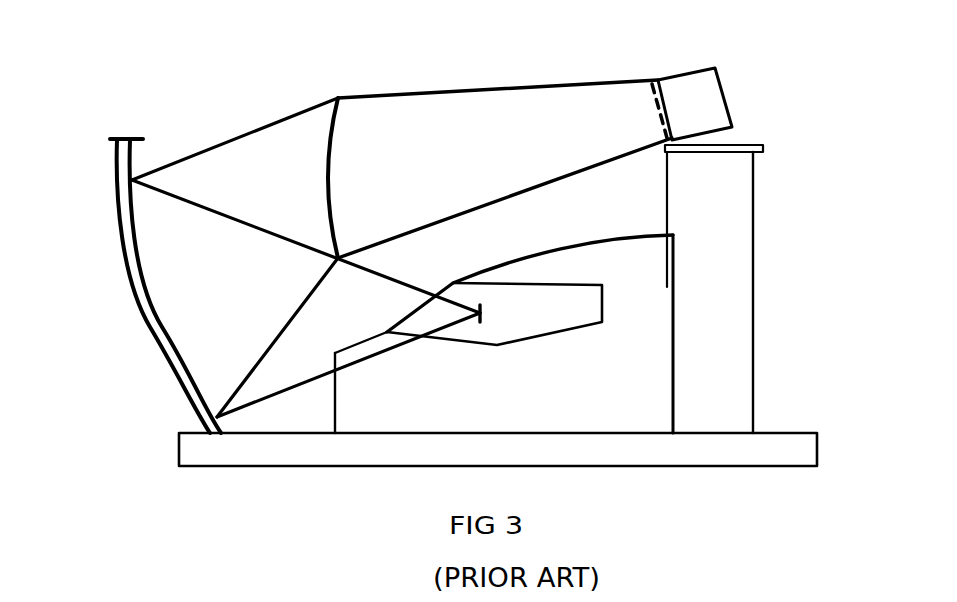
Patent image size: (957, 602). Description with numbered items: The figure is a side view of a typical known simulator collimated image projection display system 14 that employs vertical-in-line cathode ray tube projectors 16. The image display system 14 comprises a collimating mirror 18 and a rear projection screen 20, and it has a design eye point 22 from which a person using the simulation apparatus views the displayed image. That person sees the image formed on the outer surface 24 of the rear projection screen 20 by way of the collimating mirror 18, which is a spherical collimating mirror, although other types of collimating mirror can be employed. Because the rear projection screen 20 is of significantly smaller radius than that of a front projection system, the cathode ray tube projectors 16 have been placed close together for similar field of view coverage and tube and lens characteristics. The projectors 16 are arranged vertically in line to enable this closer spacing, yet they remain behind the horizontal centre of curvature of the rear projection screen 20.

The collimated image projection display system 14 is at (810, 160).
The cathode ray tube projector 16 is at (715, 88).
The collimating mirror 18 is at (125, 168).
The rear projection screen 20 is at (338, 98).
The design eye point 22 is at (482, 314).
The outer surface 24 is at (325, 140).